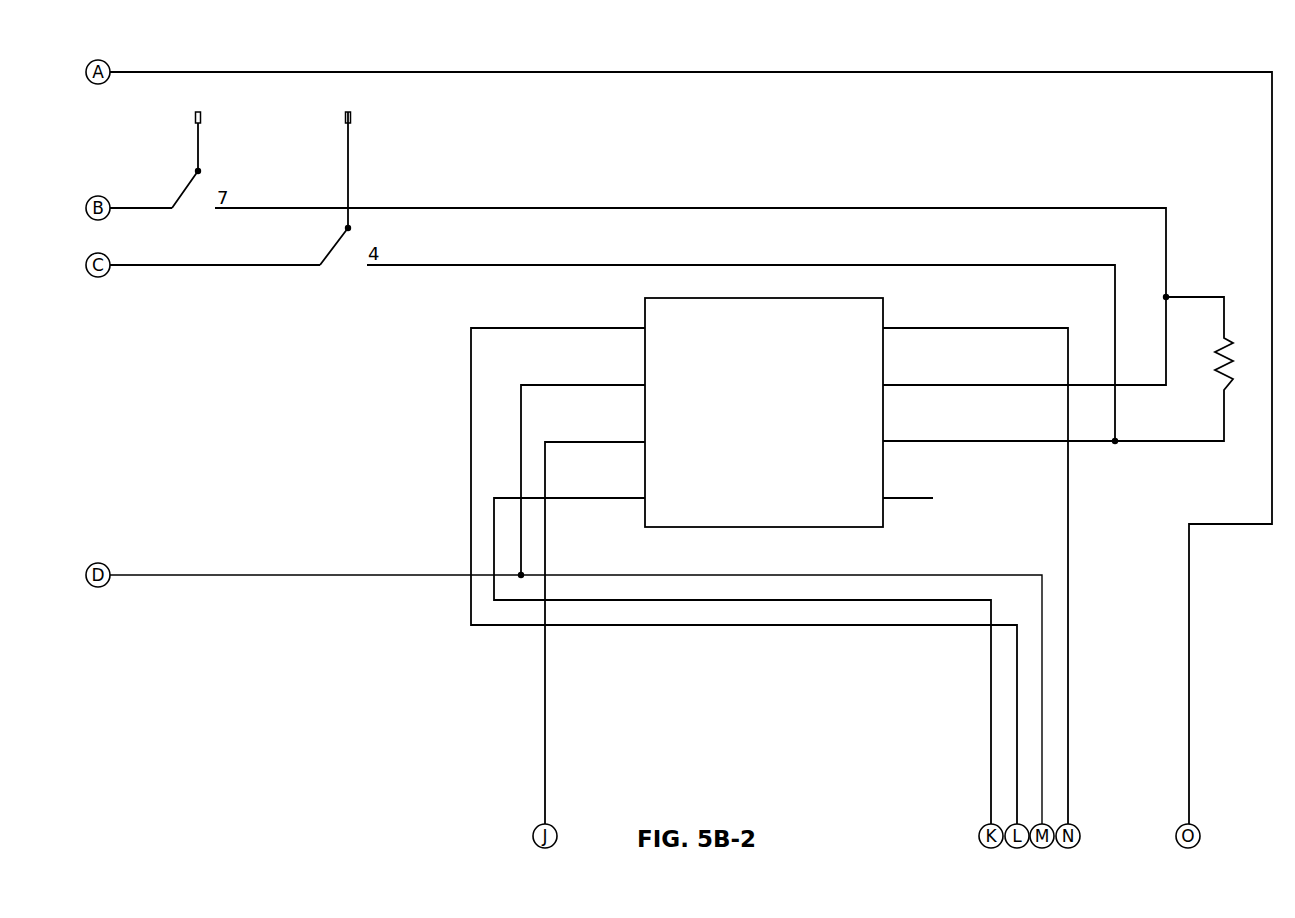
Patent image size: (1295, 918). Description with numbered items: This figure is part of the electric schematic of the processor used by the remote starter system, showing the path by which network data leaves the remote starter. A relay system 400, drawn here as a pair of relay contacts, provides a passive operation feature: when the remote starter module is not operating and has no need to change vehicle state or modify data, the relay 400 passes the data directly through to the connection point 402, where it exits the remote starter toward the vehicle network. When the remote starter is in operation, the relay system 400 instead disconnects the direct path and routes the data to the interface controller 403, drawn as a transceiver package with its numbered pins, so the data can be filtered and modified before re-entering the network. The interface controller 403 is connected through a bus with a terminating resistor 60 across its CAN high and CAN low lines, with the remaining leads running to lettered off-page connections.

The relay system 400 is at (168, 150).
The connection point 402 is at (258, 123).
The interface controller 403 is at (810, 527).
The terminating resistor R20 60 is at (1187, 369).